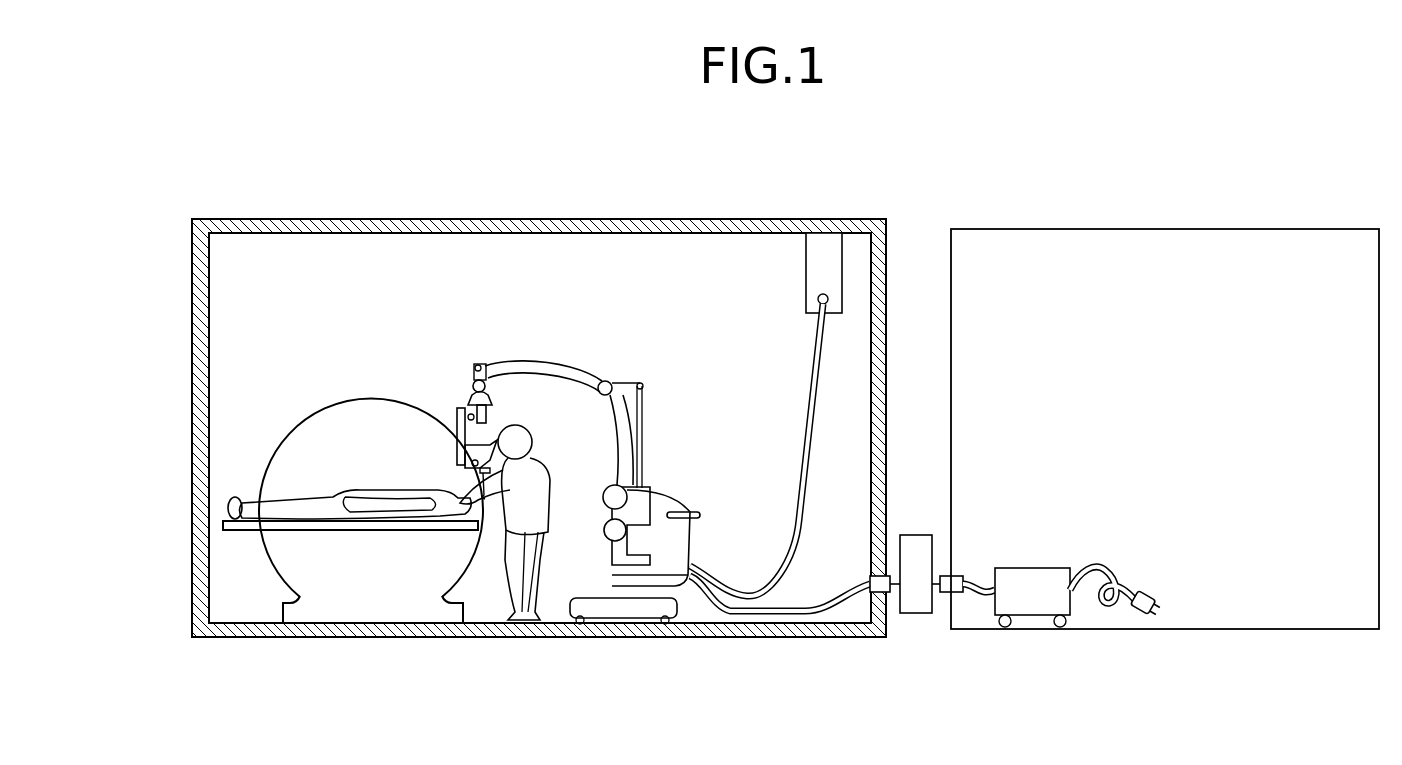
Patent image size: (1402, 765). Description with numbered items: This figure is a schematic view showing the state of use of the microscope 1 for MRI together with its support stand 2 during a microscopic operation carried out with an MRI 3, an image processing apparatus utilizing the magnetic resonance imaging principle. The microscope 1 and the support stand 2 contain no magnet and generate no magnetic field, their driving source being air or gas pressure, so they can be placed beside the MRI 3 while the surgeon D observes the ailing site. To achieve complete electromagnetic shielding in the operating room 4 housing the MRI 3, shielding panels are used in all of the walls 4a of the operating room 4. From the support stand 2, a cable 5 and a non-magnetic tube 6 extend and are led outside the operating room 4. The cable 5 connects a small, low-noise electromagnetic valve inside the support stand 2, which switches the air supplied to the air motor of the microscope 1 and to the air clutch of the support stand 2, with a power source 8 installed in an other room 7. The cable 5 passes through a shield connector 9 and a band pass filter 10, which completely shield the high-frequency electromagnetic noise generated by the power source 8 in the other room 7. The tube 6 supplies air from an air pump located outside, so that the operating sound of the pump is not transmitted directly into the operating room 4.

The microscope for MRI 1 is at (455, 444).
The support stand 2 is at (637, 567).
The MRI 3 is at (380, 603).
The operating room 4 is at (597, 278).
The walls 4a is at (186, 552).
The cable 5 is at (780, 617).
The tube 6 is at (720, 597).
The other room 7 is at (1154, 278).
The power source 8 is at (1040, 605).
The shield connector 9 is at (873, 597).
The band pass filter 10 is at (920, 607).
The surgeon D is at (513, 600).